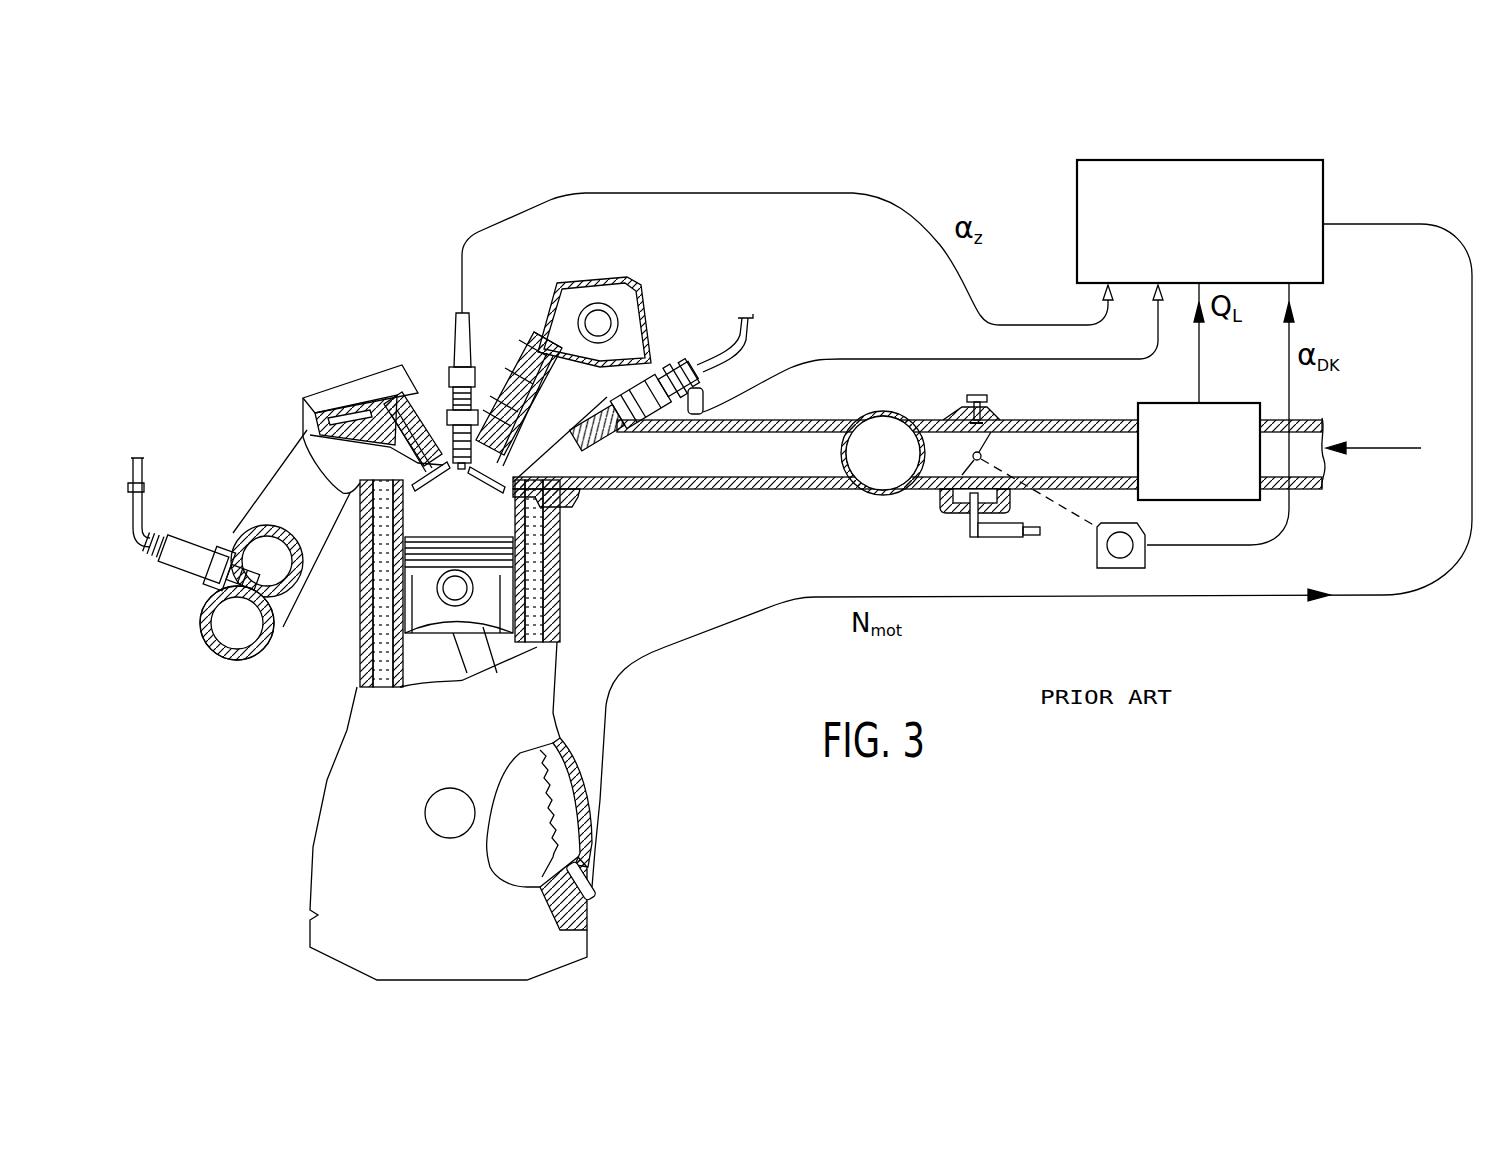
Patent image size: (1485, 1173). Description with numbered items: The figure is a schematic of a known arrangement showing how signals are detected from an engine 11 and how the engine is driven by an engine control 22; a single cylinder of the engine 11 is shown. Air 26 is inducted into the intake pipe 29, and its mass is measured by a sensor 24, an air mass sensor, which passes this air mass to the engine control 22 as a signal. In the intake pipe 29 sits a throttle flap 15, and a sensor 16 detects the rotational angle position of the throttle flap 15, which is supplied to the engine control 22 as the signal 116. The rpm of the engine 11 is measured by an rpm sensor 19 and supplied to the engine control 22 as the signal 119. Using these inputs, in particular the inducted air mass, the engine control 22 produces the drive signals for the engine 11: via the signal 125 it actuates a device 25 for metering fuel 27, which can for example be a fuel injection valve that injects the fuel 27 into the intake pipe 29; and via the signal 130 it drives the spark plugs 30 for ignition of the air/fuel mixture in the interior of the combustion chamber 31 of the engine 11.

The engine 11 is at (333, 780).
The throttle flap 15 is at (982, 454).
The sensor 16 is at (1143, 558).
The rpm sensor 19 is at (588, 885).
The engine control 22 is at (1323, 258).
The sensor (air mass sensor) 24 is at (1224, 421).
The device for metering fuel 25 is at (672, 372).
The air 26 is at (1371, 453).
The fuel 27 is at (745, 305).
The intake pipe 29 is at (745, 452).
The spark plugs 30 is at (478, 343).
The combustion chamber 31 is at (477, 518).
The signal 116 is at (1291, 513).
The signal 119 is at (1417, 588).
The signal 125 is at (830, 359).
The signal 130 is at (904, 216).